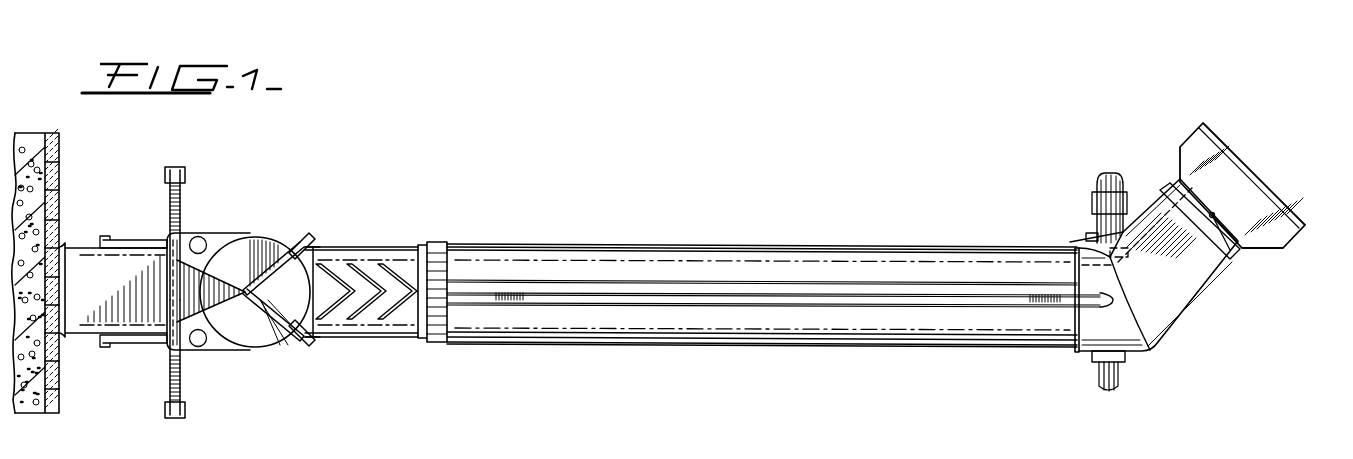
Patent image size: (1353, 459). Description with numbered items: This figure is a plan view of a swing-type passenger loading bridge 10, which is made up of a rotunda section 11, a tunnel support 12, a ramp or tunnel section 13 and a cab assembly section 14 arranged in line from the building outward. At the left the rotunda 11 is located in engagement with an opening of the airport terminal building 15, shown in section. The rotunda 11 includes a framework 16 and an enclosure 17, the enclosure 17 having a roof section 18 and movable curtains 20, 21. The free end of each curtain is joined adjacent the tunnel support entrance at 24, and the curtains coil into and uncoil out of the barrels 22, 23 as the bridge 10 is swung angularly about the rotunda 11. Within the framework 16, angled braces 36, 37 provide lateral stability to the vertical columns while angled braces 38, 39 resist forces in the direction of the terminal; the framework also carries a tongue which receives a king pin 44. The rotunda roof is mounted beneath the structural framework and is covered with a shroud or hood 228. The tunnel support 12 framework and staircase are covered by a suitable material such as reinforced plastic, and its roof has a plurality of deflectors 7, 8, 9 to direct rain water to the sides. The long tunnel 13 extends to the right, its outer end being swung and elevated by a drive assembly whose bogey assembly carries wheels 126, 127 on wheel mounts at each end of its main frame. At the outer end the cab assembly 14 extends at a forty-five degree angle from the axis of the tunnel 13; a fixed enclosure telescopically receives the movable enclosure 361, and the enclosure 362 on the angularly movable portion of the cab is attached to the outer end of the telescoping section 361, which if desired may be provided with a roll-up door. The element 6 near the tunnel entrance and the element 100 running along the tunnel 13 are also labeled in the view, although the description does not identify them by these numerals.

The valve outlet 6 is at (308, 246).
The deflector 7 is at (383, 265).
The deflector 8 is at (352, 265).
The deflector 9 is at (322, 265).
The passenger loading bridge 10 is at (750, 212).
The rotunda section 11 is at (268, 386).
The tunnel support 12 is at (352, 350).
The tunnel section 13 is at (754, 344).
The cab assembly section 14 is at (1222, 298).
The airport terminal building 15 is at (59, 403).
The framework 16 is at (287, 250).
The enclosure 17 is at (240, 234).
The roof section 18 is at (268, 328).
The movable curtain 20 is at (245, 348).
The movable curtain 21 is at (252, 237).
The barrel 22 is at (198, 236).
The barrel 23 is at (198, 347).
The tunnel support entrance 24 is at (297, 243).
The angled brace 36 is at (170, 203).
The angled brace 37 is at (168, 393).
The angled brace 38 is at (138, 236).
The angled brace 39 is at (143, 347).
The king pin 44 is at (247, 300).
The inner conduit 100 is at (885, 295).
The wheel 126 is at (1108, 178).
The wheel 127 is at (1118, 388).
The shroud or hood 228 is at (168, 365).
The movable enclosure 361 is at (1245, 252).
The enclosure 362 is at (1180, 147).